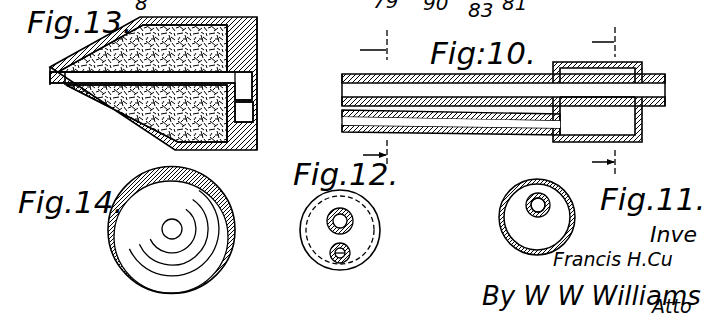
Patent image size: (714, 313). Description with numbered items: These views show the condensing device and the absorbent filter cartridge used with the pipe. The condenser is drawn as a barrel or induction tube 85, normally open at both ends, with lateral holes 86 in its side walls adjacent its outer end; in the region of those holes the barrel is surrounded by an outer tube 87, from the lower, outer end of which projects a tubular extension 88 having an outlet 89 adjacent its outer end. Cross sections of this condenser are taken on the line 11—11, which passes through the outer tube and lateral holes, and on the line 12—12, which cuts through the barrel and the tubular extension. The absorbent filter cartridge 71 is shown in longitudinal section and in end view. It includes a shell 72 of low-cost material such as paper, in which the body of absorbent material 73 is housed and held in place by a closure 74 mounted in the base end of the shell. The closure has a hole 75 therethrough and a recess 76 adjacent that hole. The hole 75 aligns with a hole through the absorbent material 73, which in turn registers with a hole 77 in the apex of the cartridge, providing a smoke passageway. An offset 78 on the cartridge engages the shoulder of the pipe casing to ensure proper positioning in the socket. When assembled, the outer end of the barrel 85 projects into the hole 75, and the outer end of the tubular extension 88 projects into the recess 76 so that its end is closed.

In FIG. 13, the absorbent filter cartridge 71 is at (121, 115).
In FIG. 14, the absorbent filter cartridge 71 is at (124, 248).
In FIG. 13, the shell 72 is at (237, 151).
In FIG. 14, the shell 72 is at (233, 250).
In FIG. 13, the body of absorbent material 73 is at (236, 45).
In FIG. 13, the closure 74 is at (252, 66).
In FIG. 13, the hole 75 is at (247, 88).
In FIG. 13, the recess 76 is at (248, 115).
In FIG. 13, the hole 77 is at (52, 77).
In FIG. 14, the hole 77 is at (163, 226).
In FIG. 14, the offset 78 is at (156, 176).
In FIG. 10, the barrel 85 is at (662, 80).
In FIG. 12, the barrel 85 is at (328, 221).
In FIG. 11, the barrel 85 is at (526, 204).
In FIG. 10, the lateral holes 86 is at (614, 105).
In FIG. 11, the lateral holes 86 is at (537, 193).
In FIG. 10, the outer tube 87 is at (633, 65).
In FIG. 12, the outer tube 87 is at (308, 212).
In FIG. 11, the outer tube 87 is at (500, 213).
In FIG. 10, the tubular extension 88 is at (485, 134).
In FIG. 12, the tubular extension 88 is at (352, 253).
In FIG. 11, the tubular extension 88 is at (484, 158).
In FIG. 10, the outlet 89 is at (381, 131).
In FIG. 12, the outlet 89 is at (344, 262).
In FIG. 10, the section line 11— 11 is at (618, 101).
In FIG. 10, the section line 12— 12 is at (388, 98).